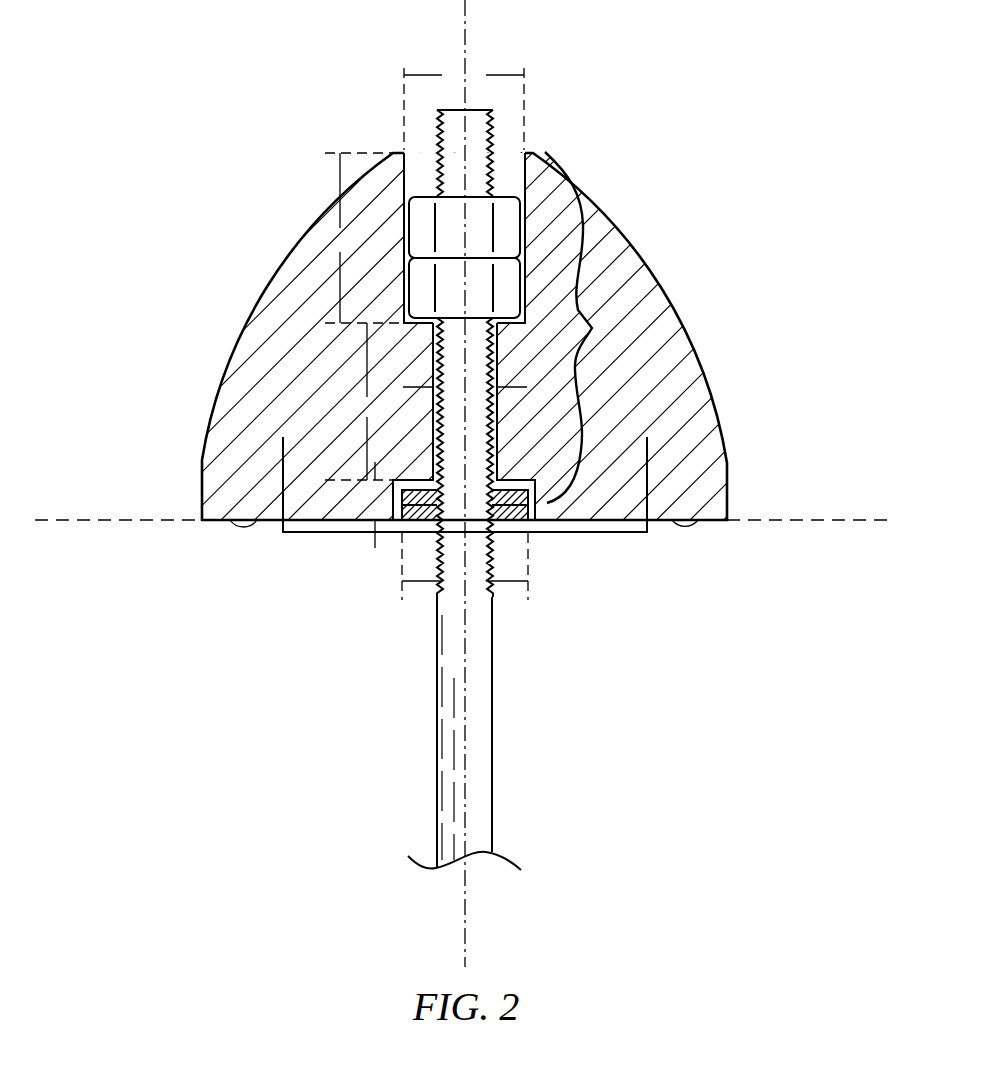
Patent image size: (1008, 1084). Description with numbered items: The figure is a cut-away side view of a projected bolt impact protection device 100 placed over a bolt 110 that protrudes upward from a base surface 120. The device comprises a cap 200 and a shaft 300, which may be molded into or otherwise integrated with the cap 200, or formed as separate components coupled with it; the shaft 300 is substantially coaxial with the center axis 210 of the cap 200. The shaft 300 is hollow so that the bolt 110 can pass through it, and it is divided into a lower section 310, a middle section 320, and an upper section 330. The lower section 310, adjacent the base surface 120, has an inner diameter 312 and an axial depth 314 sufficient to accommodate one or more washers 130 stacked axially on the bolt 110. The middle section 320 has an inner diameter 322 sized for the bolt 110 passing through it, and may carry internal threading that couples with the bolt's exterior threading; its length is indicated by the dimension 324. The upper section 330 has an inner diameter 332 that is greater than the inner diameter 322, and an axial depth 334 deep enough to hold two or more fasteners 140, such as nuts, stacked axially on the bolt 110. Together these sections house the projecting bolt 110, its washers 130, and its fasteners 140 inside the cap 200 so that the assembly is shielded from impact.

The projected bolt impact protection device 100 is at (504, 490).
The bolt 110 is at (493, 680).
The base surface 120 is at (143, 520).
The washers 130 is at (397, 530).
The fasteners 140 is at (428, 213).
The cap 200 is at (658, 277).
The center axis 210 is at (468, 10).
The shaft 300 is at (538, 340).
The lower section 310 is at (541, 516).
The inner diameter 312 is at (465, 566).
The axial depth 314 is at (371, 505).
The middle section 320 is at (500, 416).
The inner diameter 322 is at (465, 387).
The bore length 324 is at (359, 401).
The upper section 330 is at (540, 155).
The inner diameter 332 is at (464, 107).
The axial depth 334 is at (363, 238).